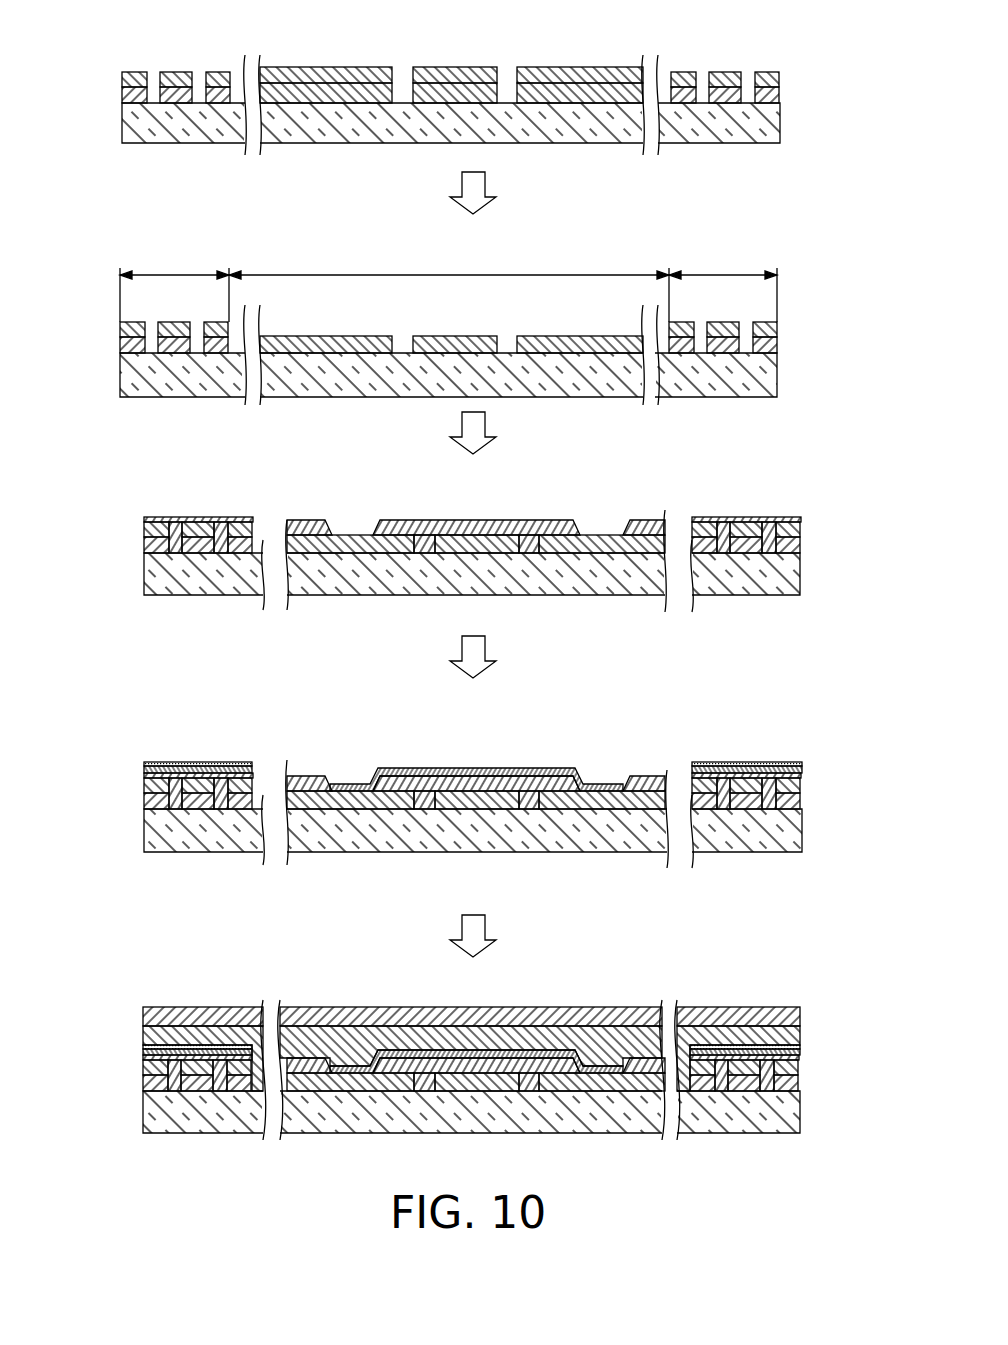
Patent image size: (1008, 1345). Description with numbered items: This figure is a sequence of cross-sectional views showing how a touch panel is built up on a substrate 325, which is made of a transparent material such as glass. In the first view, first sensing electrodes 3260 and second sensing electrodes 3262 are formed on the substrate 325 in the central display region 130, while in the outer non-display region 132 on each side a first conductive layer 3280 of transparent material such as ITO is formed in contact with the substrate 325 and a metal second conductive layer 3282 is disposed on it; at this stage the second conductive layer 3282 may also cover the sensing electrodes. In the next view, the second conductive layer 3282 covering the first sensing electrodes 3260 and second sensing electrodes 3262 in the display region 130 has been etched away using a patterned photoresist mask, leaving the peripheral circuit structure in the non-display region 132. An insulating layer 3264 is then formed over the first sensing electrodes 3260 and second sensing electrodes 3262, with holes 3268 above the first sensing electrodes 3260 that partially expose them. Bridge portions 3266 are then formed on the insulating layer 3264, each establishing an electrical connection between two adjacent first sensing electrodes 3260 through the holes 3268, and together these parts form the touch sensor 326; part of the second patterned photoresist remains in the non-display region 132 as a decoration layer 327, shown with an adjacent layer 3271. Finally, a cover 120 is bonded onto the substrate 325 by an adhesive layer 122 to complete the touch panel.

The substrate 325 is at (137, 117).
The first sensing electrodes 3260 is at (333, 92).
The second sensing electrodes 3262 is at (458, 92).
The first conductive layer 3280 is at (768, 90).
The second conductive layer 3282 is at (723, 75).
The non-display region 132 is at (448, 282).
The display region 130 is at (449, 261).
The insulating layer 3264 is at (173, 540).
The holes 3268 is at (351, 519).
The decoration layer 327 is at (200, 762).
The alignment layer 3271 is at (258, 767).
The touch sensor 326 is at (374, 744).
The bridge portions 3266 is at (468, 767).
The cover 120 is at (740, 1012).
The adhesive layer 122 is at (778, 1036).